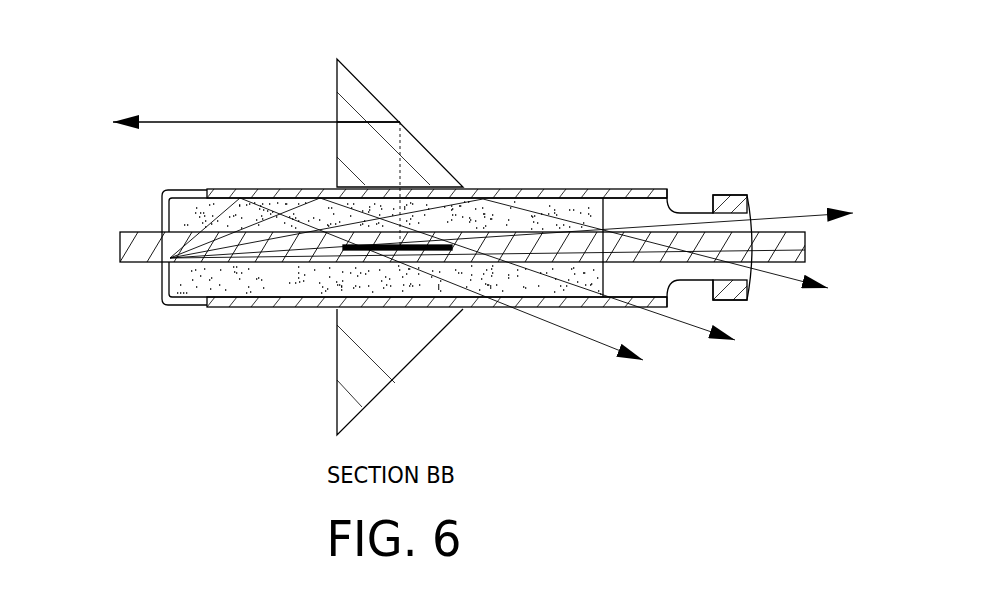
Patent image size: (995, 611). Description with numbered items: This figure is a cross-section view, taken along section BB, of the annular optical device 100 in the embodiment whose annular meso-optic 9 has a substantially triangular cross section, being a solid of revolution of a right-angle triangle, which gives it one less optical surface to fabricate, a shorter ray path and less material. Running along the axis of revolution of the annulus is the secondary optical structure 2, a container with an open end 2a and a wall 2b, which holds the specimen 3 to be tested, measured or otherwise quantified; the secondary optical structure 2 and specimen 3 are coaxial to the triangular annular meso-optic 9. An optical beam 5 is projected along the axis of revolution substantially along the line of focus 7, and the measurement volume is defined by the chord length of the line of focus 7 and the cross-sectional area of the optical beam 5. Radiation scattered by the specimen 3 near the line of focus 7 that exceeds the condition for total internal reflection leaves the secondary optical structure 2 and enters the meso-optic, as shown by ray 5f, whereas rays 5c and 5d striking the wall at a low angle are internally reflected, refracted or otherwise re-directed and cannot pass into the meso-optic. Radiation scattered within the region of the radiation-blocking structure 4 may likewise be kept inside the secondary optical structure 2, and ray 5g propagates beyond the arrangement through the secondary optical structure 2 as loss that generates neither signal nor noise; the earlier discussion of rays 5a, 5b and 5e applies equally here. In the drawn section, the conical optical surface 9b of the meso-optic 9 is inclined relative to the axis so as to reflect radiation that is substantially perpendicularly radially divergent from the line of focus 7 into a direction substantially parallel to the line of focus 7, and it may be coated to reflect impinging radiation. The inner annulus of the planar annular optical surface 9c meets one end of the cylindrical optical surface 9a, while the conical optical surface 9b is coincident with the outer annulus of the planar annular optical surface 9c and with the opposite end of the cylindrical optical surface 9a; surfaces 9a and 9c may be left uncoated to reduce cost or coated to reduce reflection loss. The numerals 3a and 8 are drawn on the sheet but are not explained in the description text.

The secondary optical structure 2 is at (733, 204).
The open end 2a is at (587, 198).
The wall 2b is at (543, 192).
The specimen 3 is at (232, 298).
The casing end wall 3a is at (618, 210).
The radiation-blocking structure 4 is at (276, 305).
The optical beam 5 is at (130, 248).
The ray 5a is at (200, 221).
The ray 5b is at (215, 228).
The ray 5c is at (243, 222).
The ray 5d is at (275, 230).
The ray 5e is at (317, 247).
The ray 5f is at (401, 172).
The ray 5g is at (560, 330).
The line of focus 7 is at (380, 257).
The lower lining 8 is at (404, 258).
The triangular annular meso-optic 9 is at (372, 130).
The cylindrical optical surface 9a is at (428, 183).
The conical optical surface 9b is at (400, 114).
The planar annular optical surface 9c is at (333, 97).
The annular optical device 100 is at (546, 460).